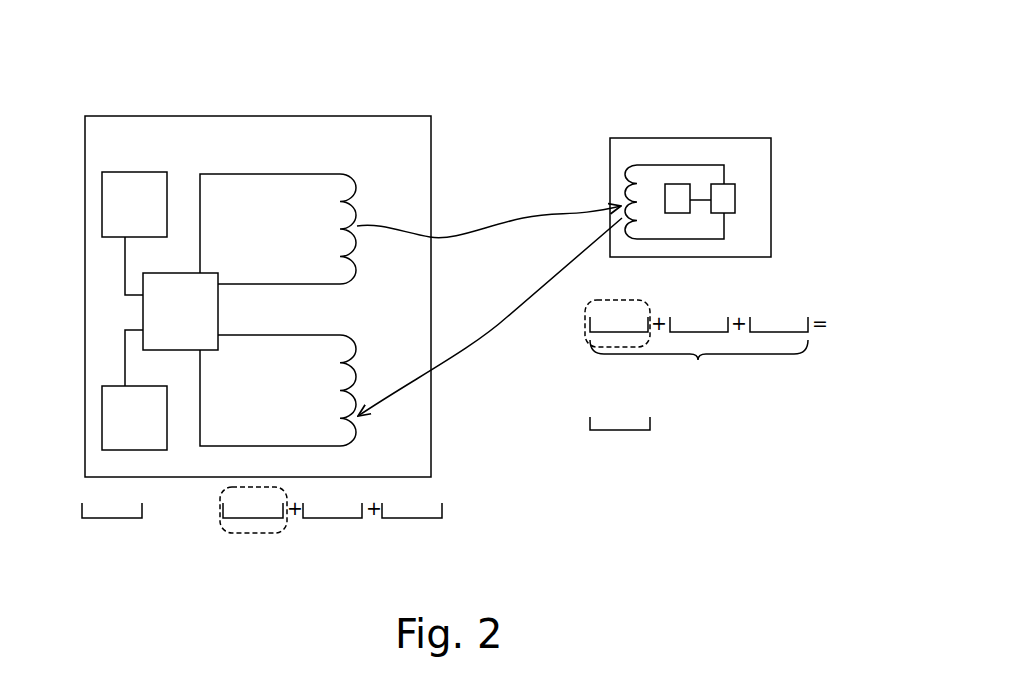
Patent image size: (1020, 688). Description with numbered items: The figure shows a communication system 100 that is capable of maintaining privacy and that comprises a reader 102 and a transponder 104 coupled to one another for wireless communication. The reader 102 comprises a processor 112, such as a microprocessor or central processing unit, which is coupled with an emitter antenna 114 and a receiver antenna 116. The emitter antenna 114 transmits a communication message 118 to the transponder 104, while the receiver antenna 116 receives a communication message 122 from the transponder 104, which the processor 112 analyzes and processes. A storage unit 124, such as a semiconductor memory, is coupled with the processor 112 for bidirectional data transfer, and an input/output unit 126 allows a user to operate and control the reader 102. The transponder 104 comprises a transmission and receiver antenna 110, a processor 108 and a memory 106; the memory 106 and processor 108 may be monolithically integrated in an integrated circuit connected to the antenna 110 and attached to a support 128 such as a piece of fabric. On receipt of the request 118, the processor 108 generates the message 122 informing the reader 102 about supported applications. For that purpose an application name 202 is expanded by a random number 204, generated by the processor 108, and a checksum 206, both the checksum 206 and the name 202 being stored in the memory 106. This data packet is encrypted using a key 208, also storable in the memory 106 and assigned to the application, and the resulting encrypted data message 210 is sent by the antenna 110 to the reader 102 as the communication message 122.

The communication system 100 is at (568, 57).
The reader 102 is at (213, 115).
The transponder 104 is at (690, 138).
The memory 106 is at (680, 213).
The processor 108 is at (735, 198).
The transmission and receiver antenna 110 is at (625, 183).
The processor 112 is at (218, 313).
The emitter antenna 114 is at (353, 193).
The receiver antenna 116 is at (355, 365).
The communication message 118 is at (477, 227).
The communication message 122 is at (525, 307).
The storage unit 124 is at (132, 172).
The input/output unit 126 is at (102, 425).
The support 128 is at (718, 152).
The application name 202 is at (620, 347).
The random number 204 is at (800, 313).
The checksum 206 is at (713, 313).
The key 208 is at (732, 375).
The encrypted data message 210 is at (640, 413).